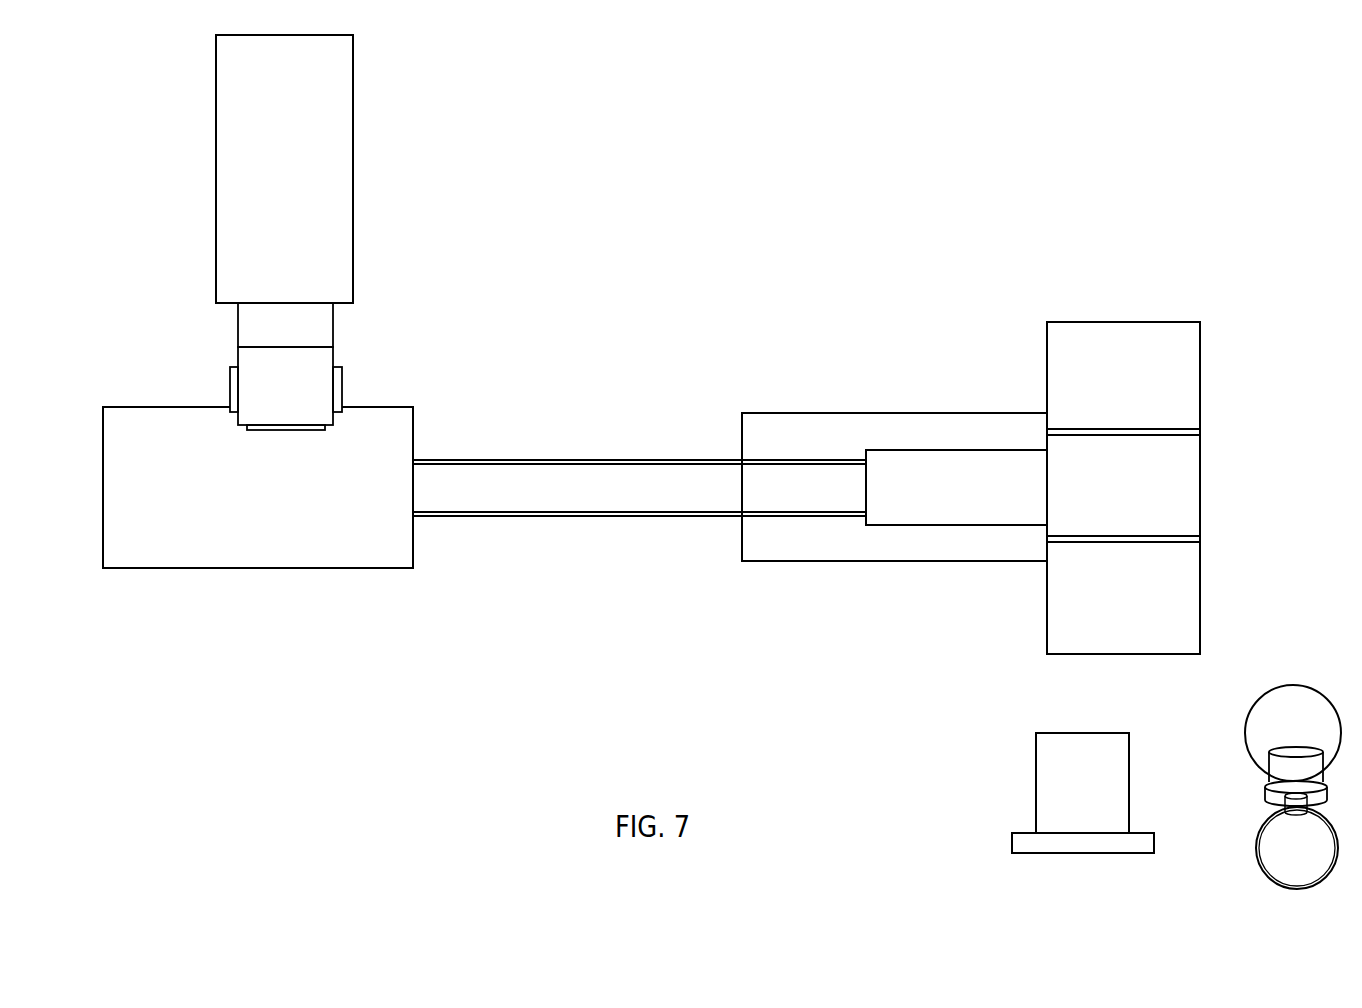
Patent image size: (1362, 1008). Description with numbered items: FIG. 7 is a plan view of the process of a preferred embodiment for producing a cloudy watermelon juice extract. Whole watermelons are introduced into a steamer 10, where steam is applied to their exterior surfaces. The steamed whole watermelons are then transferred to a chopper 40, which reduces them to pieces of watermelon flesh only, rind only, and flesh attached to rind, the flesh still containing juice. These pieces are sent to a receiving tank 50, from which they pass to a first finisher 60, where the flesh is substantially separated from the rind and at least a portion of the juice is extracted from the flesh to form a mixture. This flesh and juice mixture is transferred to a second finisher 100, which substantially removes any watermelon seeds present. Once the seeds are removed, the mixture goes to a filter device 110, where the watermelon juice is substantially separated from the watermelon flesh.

The steamer 10 is at (380, 78).
The chopper 40 is at (370, 374).
The receiving tank 50 is at (432, 425).
The first finisher 60 is at (830, 383).
The second finisher 100 is at (998, 779).
The filter device 110 is at (1245, 779).